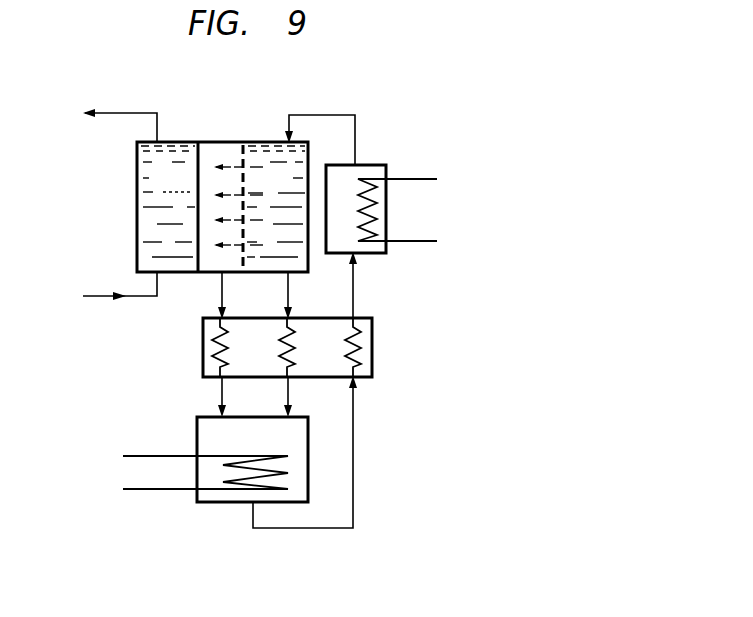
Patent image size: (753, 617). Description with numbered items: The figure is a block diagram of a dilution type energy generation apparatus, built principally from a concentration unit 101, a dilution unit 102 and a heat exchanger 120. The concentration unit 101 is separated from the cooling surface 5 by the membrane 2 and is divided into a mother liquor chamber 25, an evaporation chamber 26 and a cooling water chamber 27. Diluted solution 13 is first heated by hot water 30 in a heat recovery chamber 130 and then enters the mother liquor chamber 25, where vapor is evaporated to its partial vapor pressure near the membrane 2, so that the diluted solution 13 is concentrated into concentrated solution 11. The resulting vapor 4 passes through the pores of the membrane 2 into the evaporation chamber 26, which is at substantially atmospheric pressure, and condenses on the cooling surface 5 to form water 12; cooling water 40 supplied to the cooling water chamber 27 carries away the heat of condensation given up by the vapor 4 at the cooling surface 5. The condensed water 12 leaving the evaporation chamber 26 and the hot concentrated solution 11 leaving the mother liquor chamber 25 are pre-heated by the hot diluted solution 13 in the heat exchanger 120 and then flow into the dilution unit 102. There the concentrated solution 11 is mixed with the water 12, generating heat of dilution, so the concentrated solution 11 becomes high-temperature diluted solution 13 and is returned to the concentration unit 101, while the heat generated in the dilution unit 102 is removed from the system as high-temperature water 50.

The concentration unit 101 is at (137, 153).
The cooling surface 5 is at (197, 177).
The membrane 2 is at (247, 175).
The cooling water chamber 27 is at (173, 148).
The evaporation chamber 26 is at (214, 153).
The mother liquor chamber 25 is at (268, 150).
The vapor 4 is at (228, 162).
The cooling water 40 is at (99, 290).
The water 12 is at (222, 295).
The concentrated solution 11 is at (288, 295).
The heat exchanger 120 is at (203, 336).
The diluted solution 13 is at (353, 410).
The heat recovery chamber 130 is at (378, 254).
The hot water 30 is at (410, 179).
The dilution unit 102 is at (220, 503).
The high-temperature water 50 is at (135, 456).